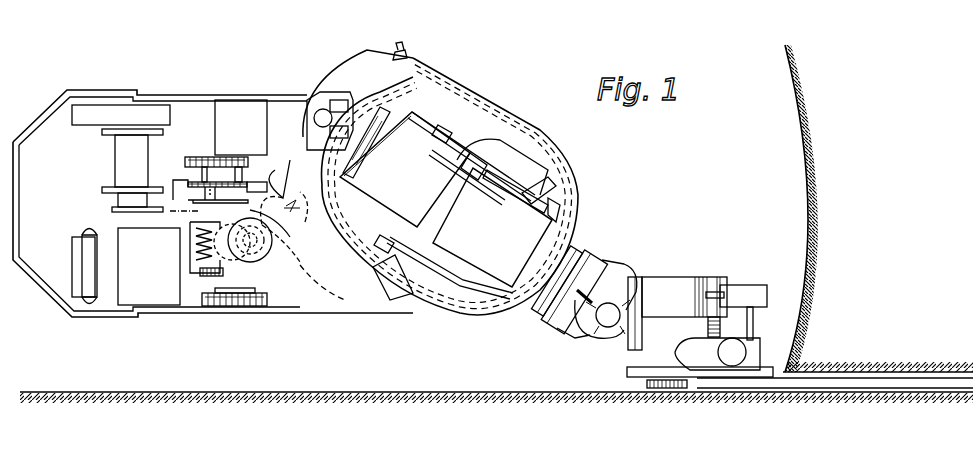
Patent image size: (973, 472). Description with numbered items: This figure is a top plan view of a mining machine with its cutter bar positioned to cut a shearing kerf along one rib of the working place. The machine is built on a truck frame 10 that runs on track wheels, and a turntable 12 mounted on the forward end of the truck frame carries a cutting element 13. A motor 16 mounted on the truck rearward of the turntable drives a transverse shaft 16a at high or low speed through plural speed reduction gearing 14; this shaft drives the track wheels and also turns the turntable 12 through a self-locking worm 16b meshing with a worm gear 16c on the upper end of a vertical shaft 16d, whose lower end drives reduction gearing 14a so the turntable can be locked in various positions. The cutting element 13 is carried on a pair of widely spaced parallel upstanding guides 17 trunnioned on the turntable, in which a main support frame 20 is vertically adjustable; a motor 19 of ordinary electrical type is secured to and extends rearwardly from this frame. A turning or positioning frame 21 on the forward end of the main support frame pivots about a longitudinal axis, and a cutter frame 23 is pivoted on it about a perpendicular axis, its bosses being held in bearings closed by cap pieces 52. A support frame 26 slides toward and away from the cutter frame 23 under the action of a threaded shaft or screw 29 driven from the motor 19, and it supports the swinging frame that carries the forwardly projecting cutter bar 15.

The truck frame 10 is at (310, 316).
The turntable 12 is at (412, 314).
The cutting element 13 is at (563, 201).
The plural speed reduction gearing 14 is at (267, 232).
The reduction gearing 14a is at (325, 232).
The cutter bar 15 is at (902, 384).
The motor 16 is at (268, 118).
The transverse shaft 16a is at (207, 175).
The worm 16b is at (195, 249).
The worm gear 16c is at (250, 255).
The vertical shaft 16d is at (313, 267).
The upstanding guides 17 is at (518, 140).
The motor 19 is at (400, 106).
The main support frame 20 is at (538, 177).
The turning or positioning frame 21 is at (612, 270).
The cutter frame 23 is at (613, 340).
The support frame 26 is at (758, 356).
The threaded shaft or screw 29 is at (712, 331).
The cap piece 52 is at (618, 320).